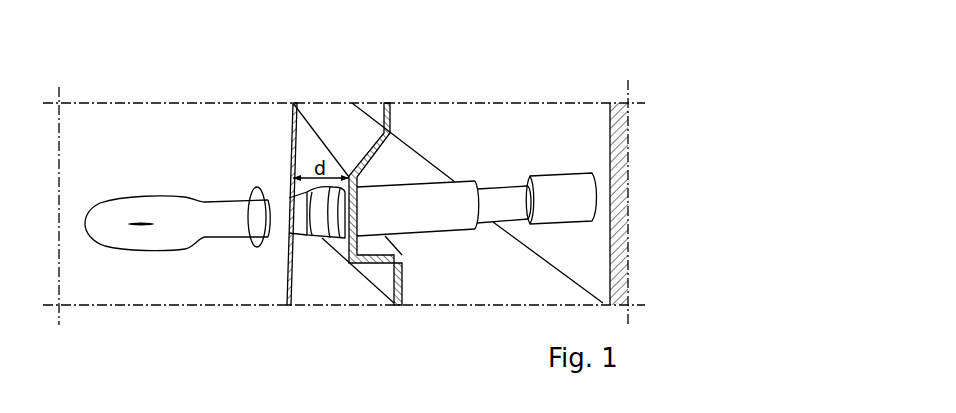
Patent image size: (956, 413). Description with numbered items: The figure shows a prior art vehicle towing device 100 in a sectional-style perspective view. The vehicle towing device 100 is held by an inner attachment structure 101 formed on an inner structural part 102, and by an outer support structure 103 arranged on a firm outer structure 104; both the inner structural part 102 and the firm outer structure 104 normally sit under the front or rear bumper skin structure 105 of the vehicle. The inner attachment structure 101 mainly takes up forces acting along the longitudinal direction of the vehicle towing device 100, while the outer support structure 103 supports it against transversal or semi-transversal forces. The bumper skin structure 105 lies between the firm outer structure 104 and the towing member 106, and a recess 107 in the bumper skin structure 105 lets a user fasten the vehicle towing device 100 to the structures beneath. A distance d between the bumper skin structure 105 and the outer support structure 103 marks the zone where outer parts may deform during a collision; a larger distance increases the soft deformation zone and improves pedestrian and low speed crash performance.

The vehicle towing device 100 is at (165, 78).
The inner attachment structure 101 is at (542, 232).
The inner structural part 102 is at (610, 138).
The outer support structure 103 is at (325, 250).
The firm outer structure 104 is at (390, 120).
The bumper skin structure 105 is at (288, 158).
The towing member 106 is at (112, 258).
The recess 107 is at (258, 250).